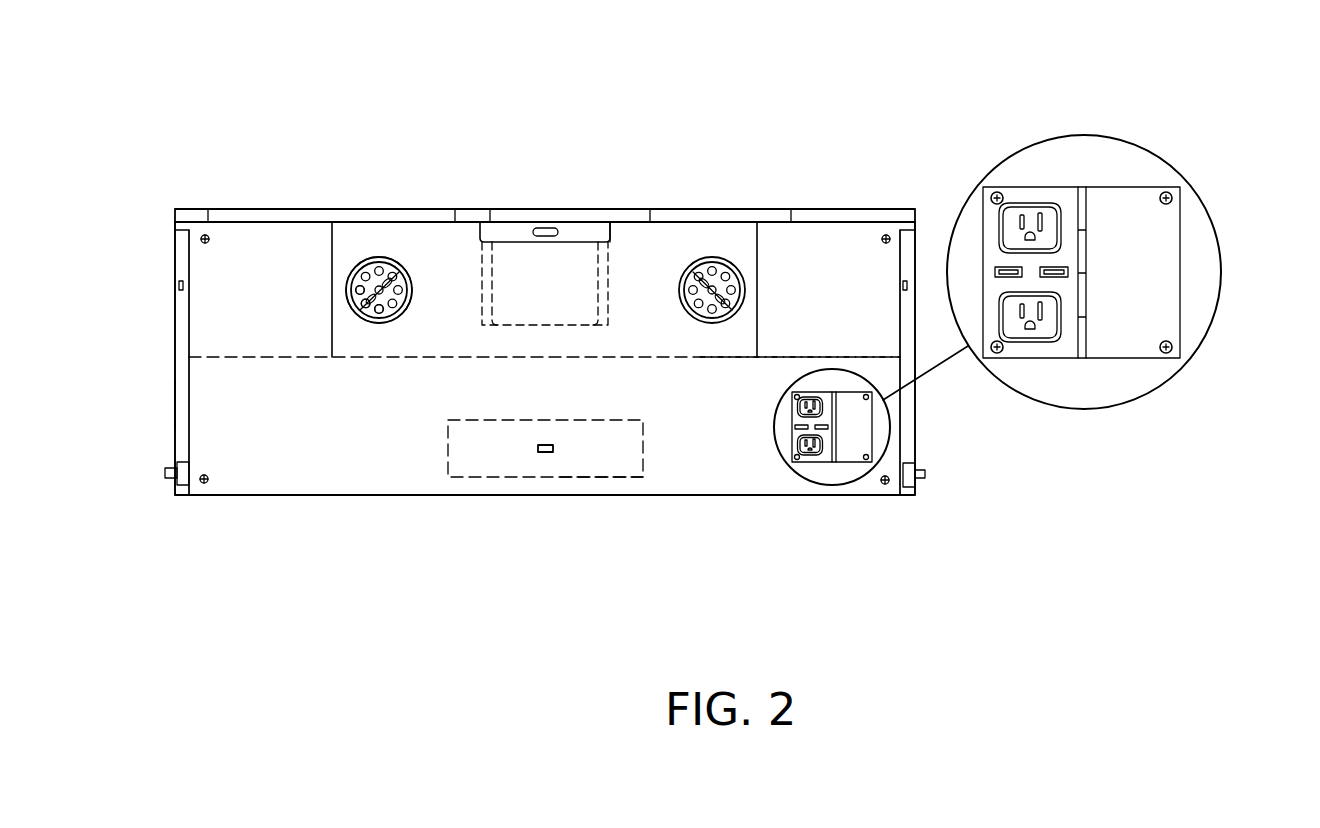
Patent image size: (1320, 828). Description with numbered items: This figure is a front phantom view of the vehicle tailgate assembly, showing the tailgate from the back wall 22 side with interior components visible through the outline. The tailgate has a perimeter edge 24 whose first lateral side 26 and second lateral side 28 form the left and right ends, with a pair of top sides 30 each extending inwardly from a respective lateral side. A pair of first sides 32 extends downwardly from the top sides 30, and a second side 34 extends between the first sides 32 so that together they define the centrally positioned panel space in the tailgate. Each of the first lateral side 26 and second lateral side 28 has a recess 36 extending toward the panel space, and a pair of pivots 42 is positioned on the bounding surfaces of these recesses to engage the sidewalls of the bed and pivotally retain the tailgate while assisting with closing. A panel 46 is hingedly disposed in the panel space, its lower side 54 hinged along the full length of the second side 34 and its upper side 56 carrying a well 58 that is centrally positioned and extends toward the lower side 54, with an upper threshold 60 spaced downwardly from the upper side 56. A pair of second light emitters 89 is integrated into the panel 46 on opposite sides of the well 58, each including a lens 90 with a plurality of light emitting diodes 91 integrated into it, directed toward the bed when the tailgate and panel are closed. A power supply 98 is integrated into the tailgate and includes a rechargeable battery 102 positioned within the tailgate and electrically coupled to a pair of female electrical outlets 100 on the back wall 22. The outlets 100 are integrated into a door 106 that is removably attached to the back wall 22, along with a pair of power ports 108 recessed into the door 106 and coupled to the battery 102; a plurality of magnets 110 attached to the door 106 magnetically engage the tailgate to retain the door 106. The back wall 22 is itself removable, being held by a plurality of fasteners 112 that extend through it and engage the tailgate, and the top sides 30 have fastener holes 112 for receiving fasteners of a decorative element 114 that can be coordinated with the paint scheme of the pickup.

The back wall 22 is at (252, 243).
The perimeter edge 24 is at (175, 334).
The first lateral side 26 is at (918, 427).
The second lateral side 28 is at (175, 402).
The top sides 30 is at (276, 212).
The first sides 32 is at (333, 238).
The second side 34 is at (425, 352).
The recess 36 is at (175, 432).
The pivots 42 is at (167, 473).
The panel 46 is at (627, 243).
The lower side 54 is at (727, 357).
The upper side 56 is at (681, 222).
The well 58 is at (514, 255).
The upper threshold 60 is at (577, 226).
The second light emitters 89 is at (396, 322).
The lens 90 is at (380, 257).
The light emitting diodes 91 is at (359, 293).
The power supply 98 is at (512, 492).
The female electrical outlets 100 is at (1040, 293).
The rechargeable battery 102 is at (596, 478).
The door 106 is at (845, 458).
The power ports 108 is at (1008, 280).
The magnets 110 is at (996, 191).
The fasteners 112 is at (204, 236).
The decorative element 114 is at (208, 209).